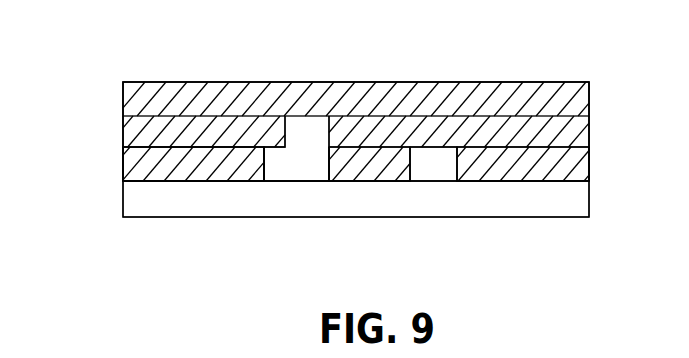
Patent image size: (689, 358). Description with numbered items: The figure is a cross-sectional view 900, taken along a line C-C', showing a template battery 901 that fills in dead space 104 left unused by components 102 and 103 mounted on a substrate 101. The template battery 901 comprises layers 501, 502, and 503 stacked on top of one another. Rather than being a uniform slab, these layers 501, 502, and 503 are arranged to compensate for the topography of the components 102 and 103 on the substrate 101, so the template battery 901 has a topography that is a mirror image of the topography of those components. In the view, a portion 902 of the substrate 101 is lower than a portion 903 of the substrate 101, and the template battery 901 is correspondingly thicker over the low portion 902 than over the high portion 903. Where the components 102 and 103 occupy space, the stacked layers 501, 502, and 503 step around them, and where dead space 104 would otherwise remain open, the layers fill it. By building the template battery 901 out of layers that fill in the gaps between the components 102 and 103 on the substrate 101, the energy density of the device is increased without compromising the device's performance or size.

The cross-sectional view 900 is at (655, 30).
The template battery 901 is at (590, 107).
The substrate 101 is at (590, 197).
The layer 503 is at (123, 102).
The layer 502 is at (123, 131).
The layer 501 is at (123, 165).
The high portion of substrate 903 is at (318, 116).
The component 102 is at (291, 170).
The component 103 is at (430, 172).
The low portion of substrate 902 is at (152, 182).
The dead space 104 is at (201, 182).